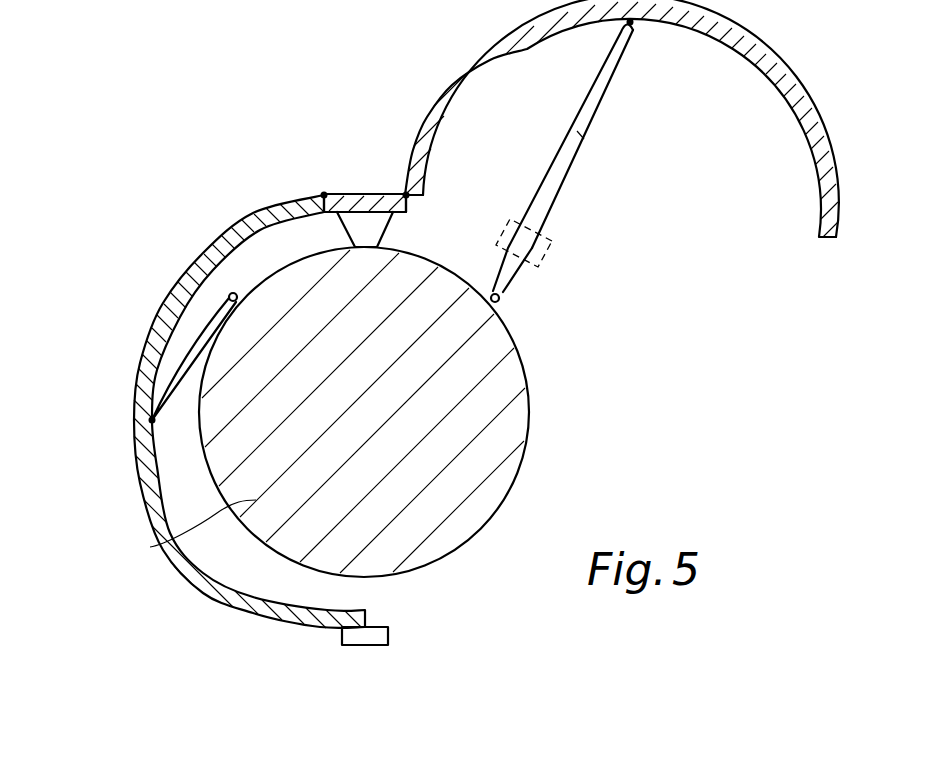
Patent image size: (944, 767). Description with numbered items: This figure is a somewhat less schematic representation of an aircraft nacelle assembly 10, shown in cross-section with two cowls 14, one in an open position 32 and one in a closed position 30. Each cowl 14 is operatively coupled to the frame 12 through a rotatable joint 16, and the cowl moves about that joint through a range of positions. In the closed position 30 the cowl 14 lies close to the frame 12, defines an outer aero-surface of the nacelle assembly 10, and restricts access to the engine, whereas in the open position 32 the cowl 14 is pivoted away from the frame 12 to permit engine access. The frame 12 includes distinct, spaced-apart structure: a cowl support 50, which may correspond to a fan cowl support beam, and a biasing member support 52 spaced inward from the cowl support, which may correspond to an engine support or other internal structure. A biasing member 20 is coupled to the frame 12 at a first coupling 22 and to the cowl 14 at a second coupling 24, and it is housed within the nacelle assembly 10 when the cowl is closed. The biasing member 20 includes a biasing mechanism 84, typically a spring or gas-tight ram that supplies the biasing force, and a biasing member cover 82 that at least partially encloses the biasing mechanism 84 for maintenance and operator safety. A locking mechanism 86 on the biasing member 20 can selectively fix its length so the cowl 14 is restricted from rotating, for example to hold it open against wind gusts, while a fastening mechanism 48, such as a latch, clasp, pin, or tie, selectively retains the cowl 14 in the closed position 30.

The nacelle assembly 10 is at (190, 100).
The frame 12 is at (359, 190).
The cowl 14 is at (141, 341).
The rotatable joint 16 is at (324, 194).
The biasing member 20 is at (202, 332).
The first coupling 22 is at (236, 293).
The second coupling 24 is at (154, 421).
The closed position 30 is at (132, 240).
The open position 32 is at (406, 75).
The fastening mechanism 48 is at (388, 644).
The cowl support 50 is at (324, 193).
The biasing member support 52 is at (177, 541).
The biasing member cover 82 is at (613, 82).
The biasing mechanism 84 is at (581, 134).
The locking mechanism 86 is at (501, 246).